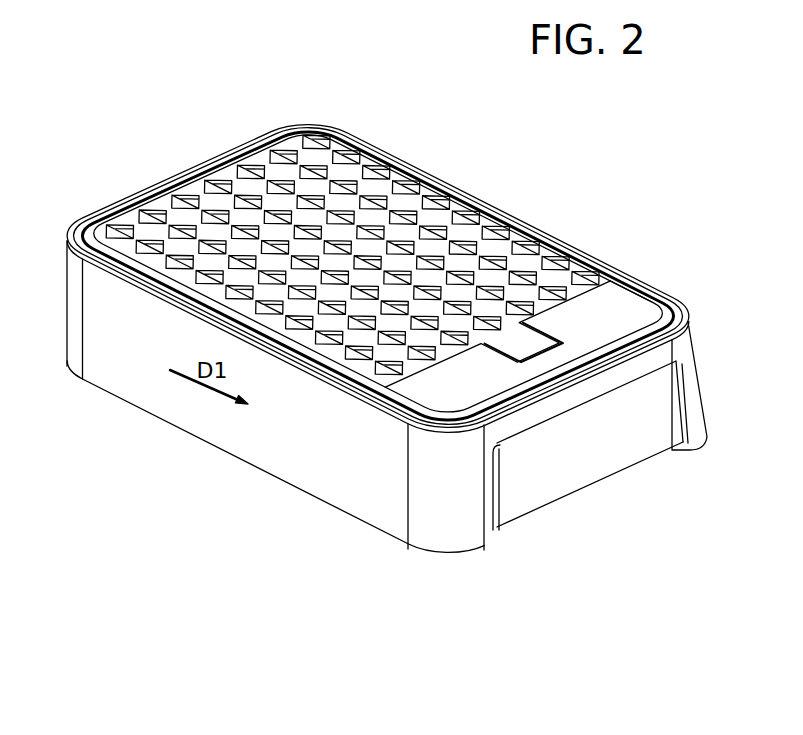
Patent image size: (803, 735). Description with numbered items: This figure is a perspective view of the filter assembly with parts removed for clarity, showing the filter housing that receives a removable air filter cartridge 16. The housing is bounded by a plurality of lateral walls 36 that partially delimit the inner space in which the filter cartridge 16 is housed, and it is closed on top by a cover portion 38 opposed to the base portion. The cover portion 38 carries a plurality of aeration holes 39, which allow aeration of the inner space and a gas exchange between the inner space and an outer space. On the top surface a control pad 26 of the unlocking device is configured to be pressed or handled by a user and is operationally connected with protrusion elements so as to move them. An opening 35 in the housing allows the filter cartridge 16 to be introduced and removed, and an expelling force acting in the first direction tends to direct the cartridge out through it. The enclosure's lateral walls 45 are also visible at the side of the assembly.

The filter cartridge 16 is at (594, 492).
The control pad 26 is at (637, 302).
The opening 35 is at (516, 543).
The lateral walls 36 is at (155, 186).
The cover portion 38 is at (563, 262).
The aeration holes 39 is at (337, 150).
The lateral walls 45 is at (641, 446).